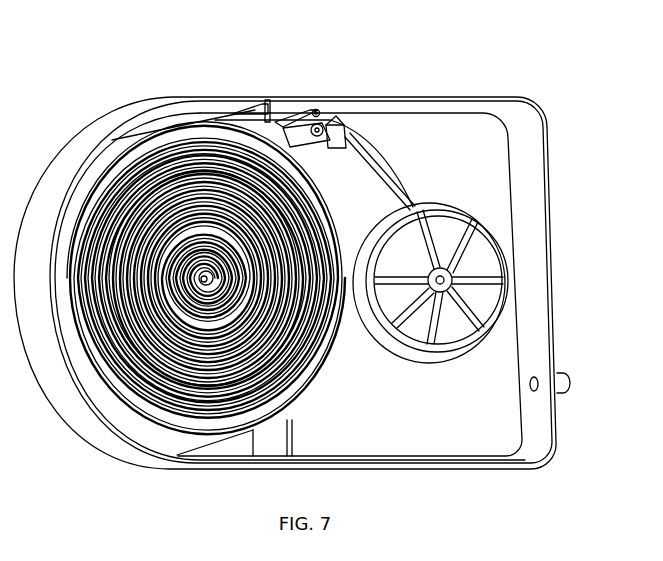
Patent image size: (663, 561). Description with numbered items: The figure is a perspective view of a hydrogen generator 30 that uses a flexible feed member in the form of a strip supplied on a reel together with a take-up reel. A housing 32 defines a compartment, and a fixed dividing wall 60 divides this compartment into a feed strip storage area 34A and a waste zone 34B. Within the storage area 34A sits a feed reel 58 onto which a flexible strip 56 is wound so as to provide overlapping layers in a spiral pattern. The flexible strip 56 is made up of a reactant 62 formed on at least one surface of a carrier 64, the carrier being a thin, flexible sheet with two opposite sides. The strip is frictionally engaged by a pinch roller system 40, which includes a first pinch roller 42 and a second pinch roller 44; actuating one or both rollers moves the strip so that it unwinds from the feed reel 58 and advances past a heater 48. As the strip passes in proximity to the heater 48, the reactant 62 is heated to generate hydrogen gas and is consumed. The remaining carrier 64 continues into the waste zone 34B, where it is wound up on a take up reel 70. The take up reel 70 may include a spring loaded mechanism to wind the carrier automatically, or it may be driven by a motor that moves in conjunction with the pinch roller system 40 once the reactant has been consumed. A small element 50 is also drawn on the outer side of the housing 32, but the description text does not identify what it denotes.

The hydrogen generator 30 is at (480, 62).
The housing 32 is at (528, 104).
The storage area 34A is at (237, 442).
The waste zone 34B is at (485, 183).
The pinch roller system 40 is at (281, 96).
The first pinch roller 42 is at (316, 109).
The second pinch roller 44 is at (322, 126).
The heater 48 is at (348, 138).
The button 50 is at (568, 376).
The flexible strip 56 is at (298, 372).
The feed reel 58 is at (208, 280).
The dividing wall 60 is at (305, 378).
The reactant 62 is at (277, 112).
The carrier 64 is at (395, 160).
The take up reel 70 is at (478, 243).